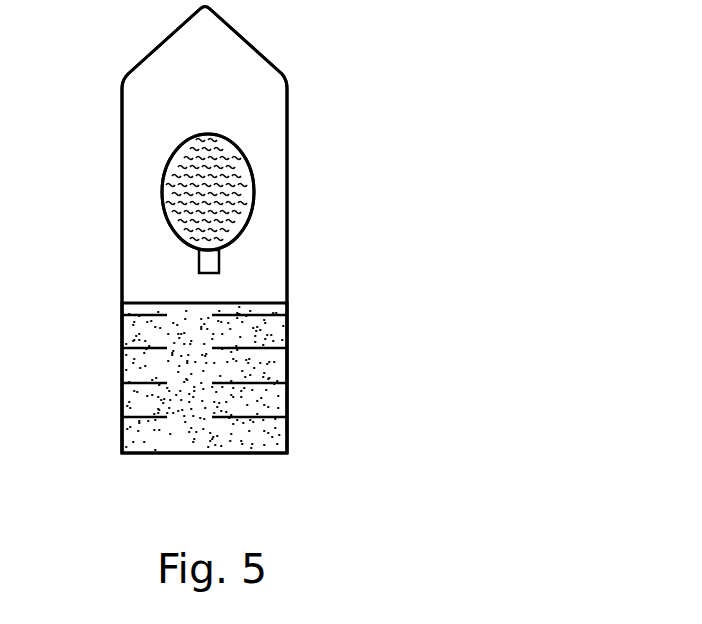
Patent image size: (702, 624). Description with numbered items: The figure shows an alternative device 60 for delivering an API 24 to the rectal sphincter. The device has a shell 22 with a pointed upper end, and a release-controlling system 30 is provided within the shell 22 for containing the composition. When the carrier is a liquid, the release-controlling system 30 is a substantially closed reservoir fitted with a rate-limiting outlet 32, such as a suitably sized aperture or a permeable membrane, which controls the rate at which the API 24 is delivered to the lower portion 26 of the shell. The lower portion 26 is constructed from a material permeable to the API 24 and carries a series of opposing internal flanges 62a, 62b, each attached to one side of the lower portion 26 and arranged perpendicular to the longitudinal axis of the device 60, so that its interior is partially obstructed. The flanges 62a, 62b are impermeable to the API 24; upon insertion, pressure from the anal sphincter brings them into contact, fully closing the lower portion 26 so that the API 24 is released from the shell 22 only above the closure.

The device 60 is at (492, 127).
The shell 22 is at (287, 252).
The API 24 is at (243, 156).
The release-controlling system 30 is at (182, 168).
The rate-limiting outlet 32 is at (199, 262).
The lower portion 26 is at (390, 418).
The internal flange 62a is at (287, 315).
The internal flange 62b is at (131, 353).